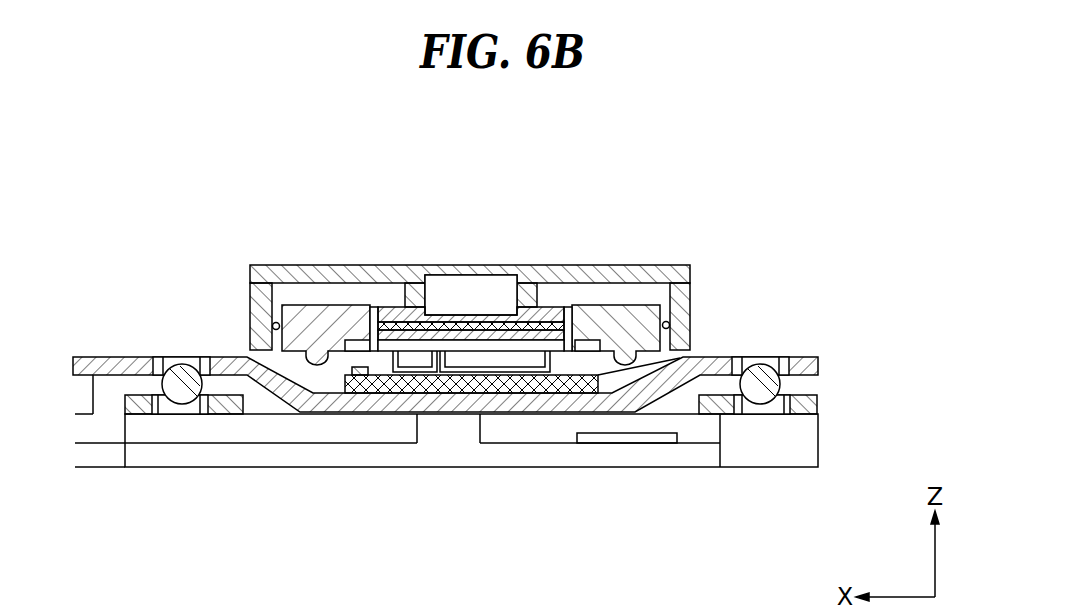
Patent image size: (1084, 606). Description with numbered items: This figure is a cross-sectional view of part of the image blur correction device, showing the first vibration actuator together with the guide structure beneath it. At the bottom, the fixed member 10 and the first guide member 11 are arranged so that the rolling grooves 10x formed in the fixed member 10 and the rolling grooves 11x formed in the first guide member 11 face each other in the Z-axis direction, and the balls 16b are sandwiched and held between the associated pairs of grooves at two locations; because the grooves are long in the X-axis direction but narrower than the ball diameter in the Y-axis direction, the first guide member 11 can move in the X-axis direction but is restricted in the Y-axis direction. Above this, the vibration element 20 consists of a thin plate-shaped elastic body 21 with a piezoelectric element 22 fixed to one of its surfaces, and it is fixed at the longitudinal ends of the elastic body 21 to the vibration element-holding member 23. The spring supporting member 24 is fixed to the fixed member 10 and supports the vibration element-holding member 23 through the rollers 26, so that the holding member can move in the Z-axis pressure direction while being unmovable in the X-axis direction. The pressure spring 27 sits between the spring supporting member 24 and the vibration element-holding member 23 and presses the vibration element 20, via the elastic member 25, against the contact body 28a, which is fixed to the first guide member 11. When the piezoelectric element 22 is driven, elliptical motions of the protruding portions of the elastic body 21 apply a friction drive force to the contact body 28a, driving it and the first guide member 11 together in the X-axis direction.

The fixed member 10 is at (720, 417).
The rolling grooves 10x is at (160, 397).
The first guide member 11 is at (450, 402).
The rolling grooves 11x is at (160, 377).
The balls 16b is at (181, 385).
The vibration element 20 is at (485, 235).
The elastic body 21 is at (538, 368).
The piezoelectric element 22 is at (528, 360).
The vibration element-holding member 23 is at (623, 333).
The spring supporting member 24 is at (672, 284).
The elastic member 25 is at (388, 303).
The rollers 26 is at (283, 283).
The pressure spring 27 is at (420, 305).
The contact body 28a is at (673, 358).